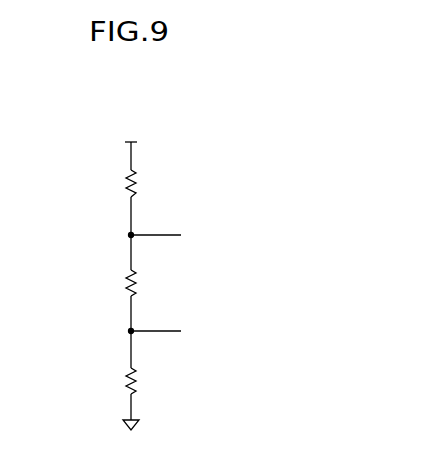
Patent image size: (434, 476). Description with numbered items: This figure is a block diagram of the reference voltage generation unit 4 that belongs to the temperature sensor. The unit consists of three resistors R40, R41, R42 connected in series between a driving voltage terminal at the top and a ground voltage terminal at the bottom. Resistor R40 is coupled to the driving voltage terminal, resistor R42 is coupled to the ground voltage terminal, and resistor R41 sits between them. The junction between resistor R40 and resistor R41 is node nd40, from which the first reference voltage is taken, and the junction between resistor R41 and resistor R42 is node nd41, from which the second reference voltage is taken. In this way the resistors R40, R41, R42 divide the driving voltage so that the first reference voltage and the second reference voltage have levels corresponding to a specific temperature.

The reference voltage generation unit 4 is at (259, 108).
The resistor R40 is at (112, 183).
The resistor R41 is at (112, 283).
The resistor R42 is at (112, 381).
The node nd40 is at (107, 235).
The node nd41 is at (107, 331).